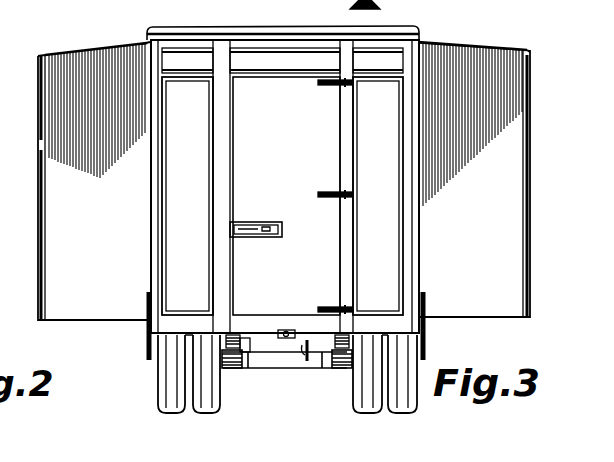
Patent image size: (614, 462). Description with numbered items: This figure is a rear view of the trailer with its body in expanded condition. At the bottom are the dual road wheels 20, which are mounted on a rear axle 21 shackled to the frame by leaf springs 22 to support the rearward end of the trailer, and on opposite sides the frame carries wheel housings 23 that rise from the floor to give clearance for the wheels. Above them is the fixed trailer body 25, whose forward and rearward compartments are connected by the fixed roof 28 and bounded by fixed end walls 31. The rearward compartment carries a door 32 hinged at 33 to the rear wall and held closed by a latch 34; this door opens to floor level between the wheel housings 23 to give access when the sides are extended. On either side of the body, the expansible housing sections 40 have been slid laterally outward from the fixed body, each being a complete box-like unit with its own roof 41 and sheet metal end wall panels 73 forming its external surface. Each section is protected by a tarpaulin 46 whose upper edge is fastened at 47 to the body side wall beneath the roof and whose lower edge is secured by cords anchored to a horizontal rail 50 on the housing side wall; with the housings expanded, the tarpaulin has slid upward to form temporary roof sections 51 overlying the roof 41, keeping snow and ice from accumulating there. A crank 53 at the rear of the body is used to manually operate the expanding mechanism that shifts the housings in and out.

The road wheels 20 is at (170, 399).
The rear axle 21 is at (267, 365).
The leaf springs 22 is at (232, 370).
The wheel housings 23 is at (148, 347).
The trailer body 25 is at (426, 263).
The fixed roof 28 is at (262, 25).
The end walls 31 is at (398, 229).
The door 32 is at (245, 156).
The hinge 33 is at (336, 191).
The latch 34 is at (263, 223).
The expansible housing sections 40 is at (55, 215).
The roof 41 is at (451, 54).
The tarpaulin 46 is at (76, 51).
The upper edge fastening 47 is at (145, 42).
The rail 50 is at (44, 255).
The temporary roof sections 51 is at (113, 44).
The crank 53 is at (306, 343).
The end wall panels 73 is at (62, 298).